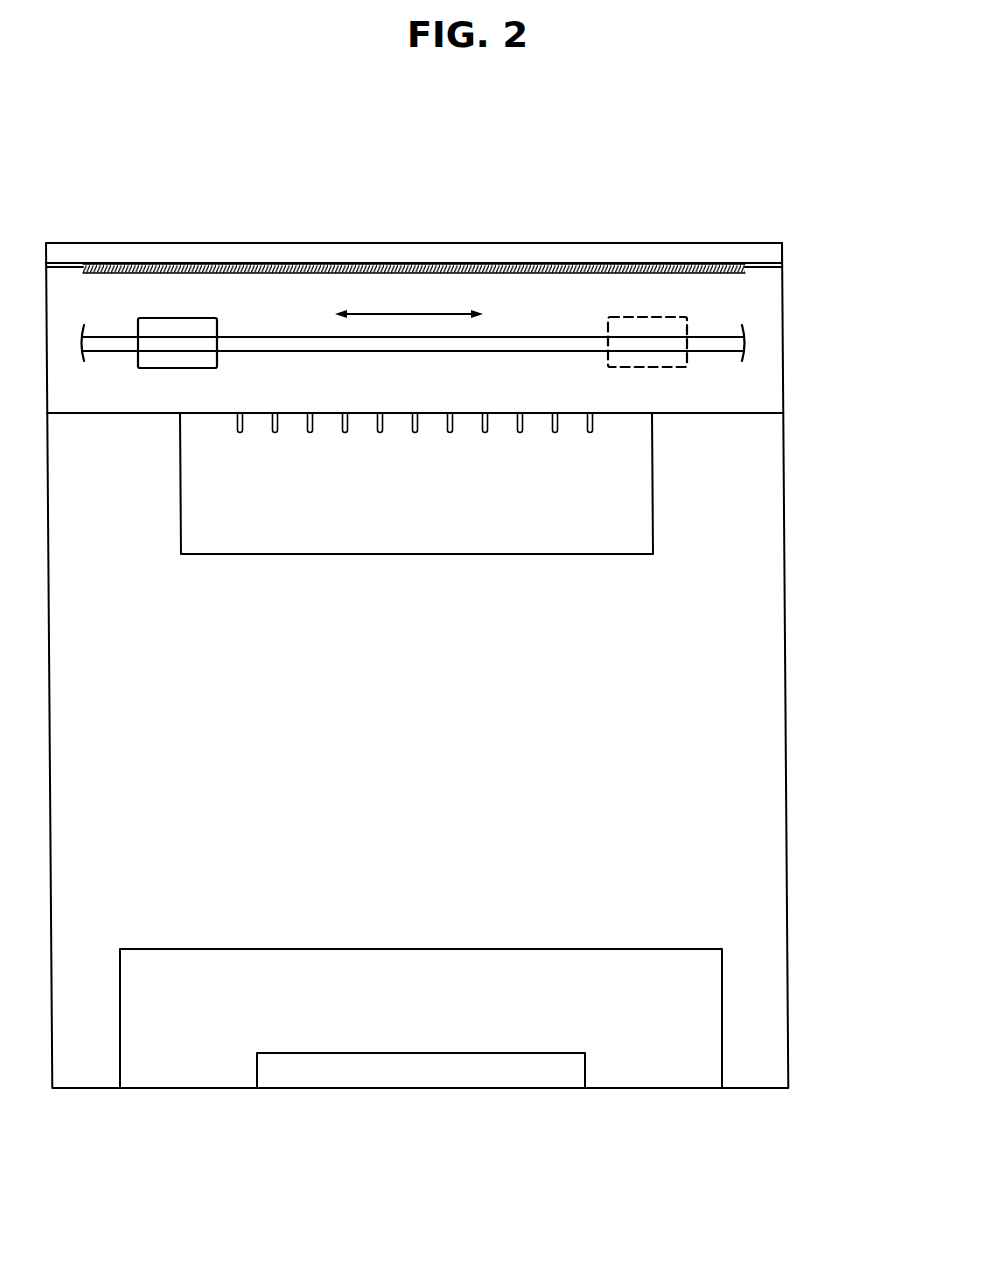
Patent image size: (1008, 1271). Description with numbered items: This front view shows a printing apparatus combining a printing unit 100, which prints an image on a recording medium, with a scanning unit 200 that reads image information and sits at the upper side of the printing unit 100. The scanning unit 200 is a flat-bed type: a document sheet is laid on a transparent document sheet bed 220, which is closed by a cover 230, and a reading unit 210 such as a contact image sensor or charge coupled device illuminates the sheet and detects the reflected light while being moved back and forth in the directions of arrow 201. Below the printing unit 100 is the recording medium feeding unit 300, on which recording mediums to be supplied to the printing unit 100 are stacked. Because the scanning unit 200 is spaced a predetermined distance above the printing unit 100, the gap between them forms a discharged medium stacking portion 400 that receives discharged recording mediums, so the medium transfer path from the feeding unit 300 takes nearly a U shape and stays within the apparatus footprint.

The printing unit 100 is at (800, 763).
The scanning unit 200 is at (800, 340).
The arrow 201 is at (413, 314).
The reading unit 210 is at (178, 318).
The document sheet bed 220 is at (598, 265).
The cover 230 is at (705, 248).
The recording medium feeding unit 300 is at (645, 925).
The discharged medium stacking portion 400 is at (435, 522).